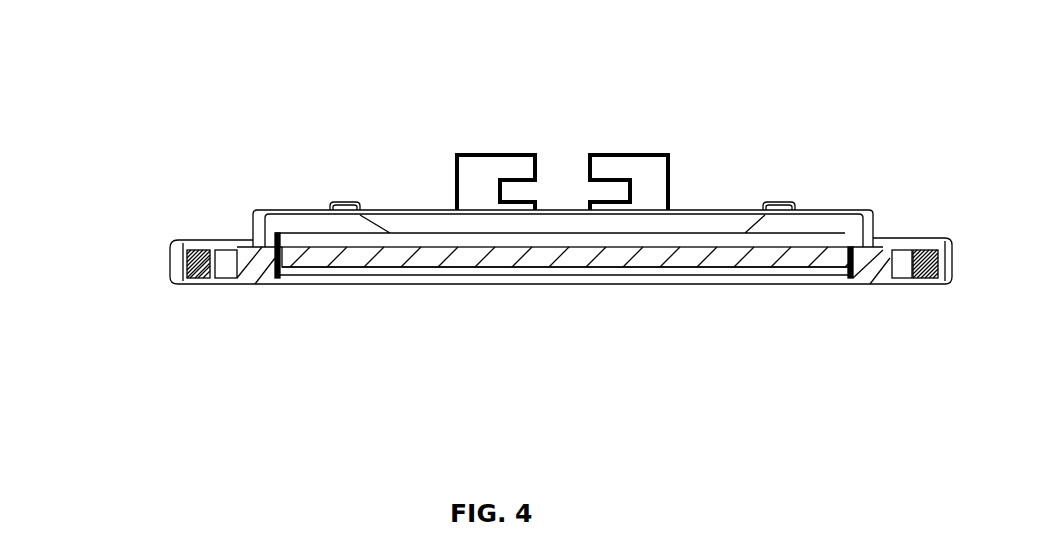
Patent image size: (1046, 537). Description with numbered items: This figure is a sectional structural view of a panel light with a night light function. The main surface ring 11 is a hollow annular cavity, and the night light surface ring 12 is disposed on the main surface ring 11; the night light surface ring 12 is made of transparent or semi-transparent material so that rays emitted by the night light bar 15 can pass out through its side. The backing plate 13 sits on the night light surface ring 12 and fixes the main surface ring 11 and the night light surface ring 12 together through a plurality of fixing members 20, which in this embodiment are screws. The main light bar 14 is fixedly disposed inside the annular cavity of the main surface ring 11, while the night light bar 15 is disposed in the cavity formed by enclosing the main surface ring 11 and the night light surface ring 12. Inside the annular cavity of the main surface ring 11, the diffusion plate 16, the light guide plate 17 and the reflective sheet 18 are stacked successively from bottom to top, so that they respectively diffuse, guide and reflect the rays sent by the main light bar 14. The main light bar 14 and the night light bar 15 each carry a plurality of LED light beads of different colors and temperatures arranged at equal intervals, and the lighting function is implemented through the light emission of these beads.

The main surface ring 11 is at (198, 276).
The night light surface ring 12 is at (900, 234).
The backing plate 13 is at (328, 203).
The main light bar 14 is at (849, 231).
The night light bar 15 is at (235, 250).
The diffusion plate 16 is at (581, 268).
The light guide plate 17 is at (544, 262).
The reflective sheet 18 is at (497, 255).
The fixing member 20 is at (547, 242).